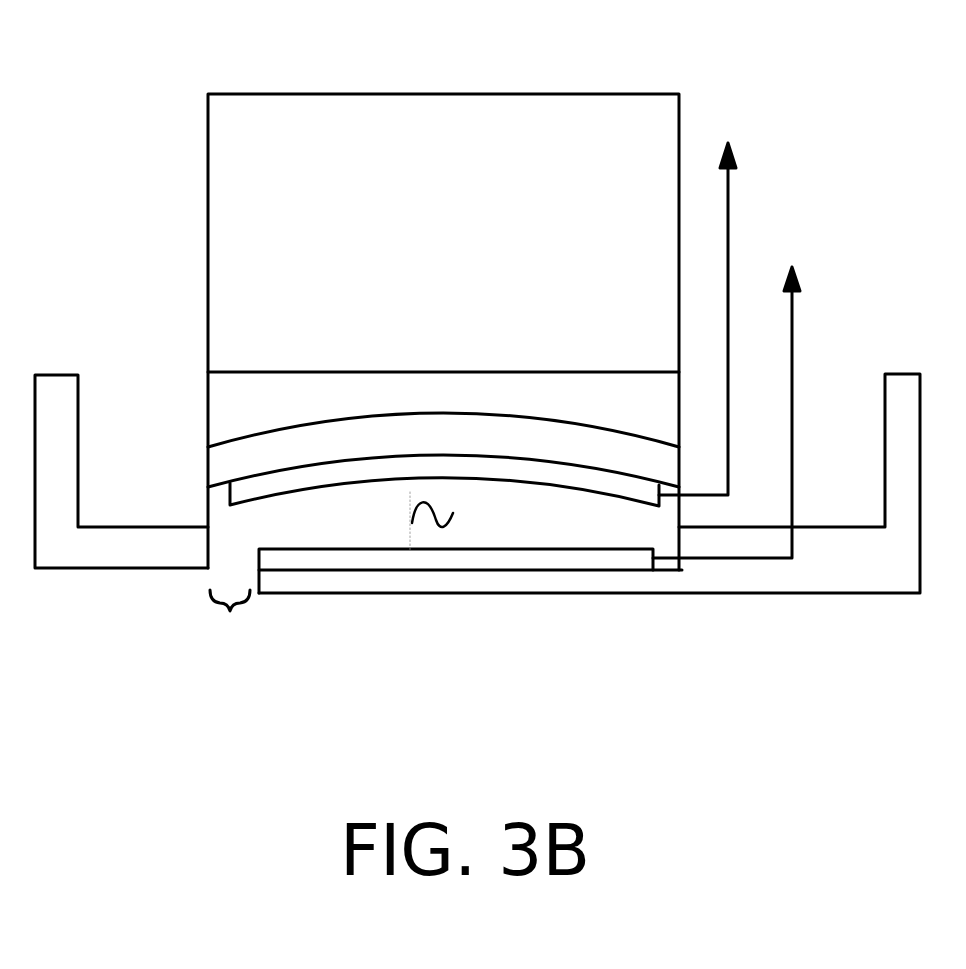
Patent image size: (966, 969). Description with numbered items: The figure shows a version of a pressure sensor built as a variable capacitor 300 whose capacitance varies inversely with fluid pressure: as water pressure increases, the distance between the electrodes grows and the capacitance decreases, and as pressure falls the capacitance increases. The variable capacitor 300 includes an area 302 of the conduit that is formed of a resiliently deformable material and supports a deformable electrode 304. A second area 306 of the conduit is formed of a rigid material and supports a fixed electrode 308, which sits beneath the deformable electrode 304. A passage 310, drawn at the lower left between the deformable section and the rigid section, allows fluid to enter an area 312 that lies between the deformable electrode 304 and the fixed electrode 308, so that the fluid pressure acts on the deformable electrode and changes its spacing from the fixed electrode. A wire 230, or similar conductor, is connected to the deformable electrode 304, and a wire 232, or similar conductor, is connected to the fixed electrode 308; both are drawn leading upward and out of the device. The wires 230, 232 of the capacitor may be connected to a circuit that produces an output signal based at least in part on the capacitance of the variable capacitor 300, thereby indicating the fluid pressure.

The variable capacitor 300 is at (300, 350).
The area of the conduit 302 is at (548, 420).
The deformable electrode 304 is at (468, 457).
The second area of the conduit 306 is at (577, 595).
The fixed electrode 308 is at (508, 568).
The passage 310 is at (230, 613).
The area between the electrodes 312 is at (432, 525).
The wire 230 is at (727, 325).
The wire 232 is at (792, 422).